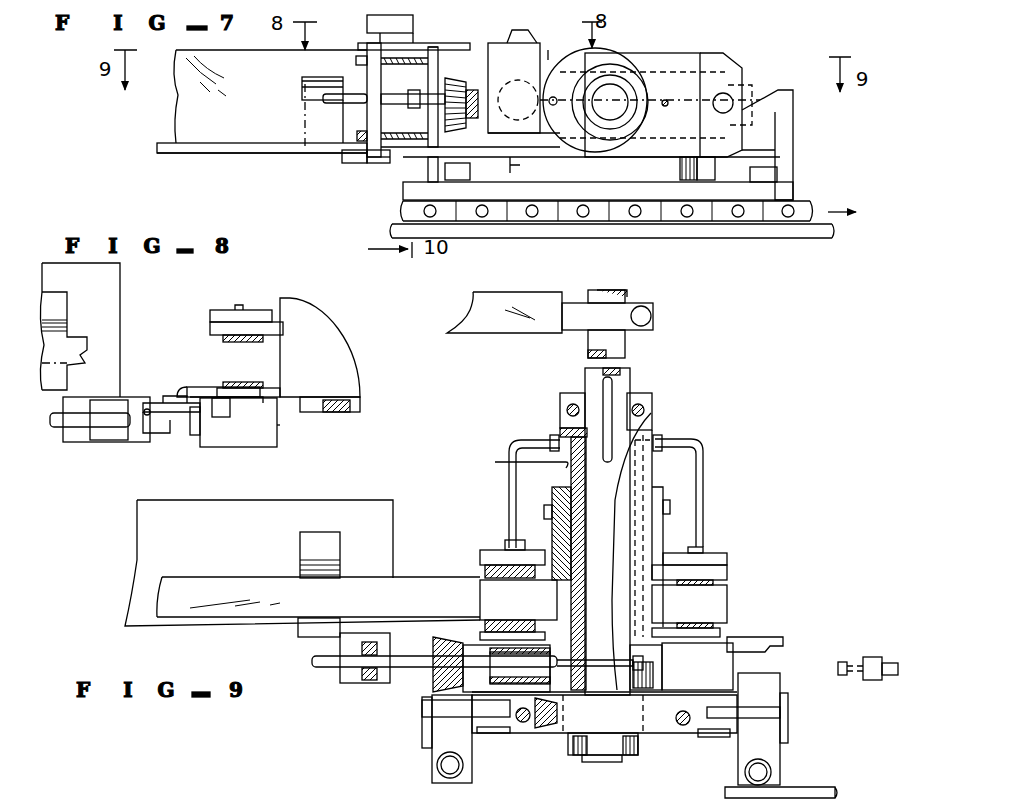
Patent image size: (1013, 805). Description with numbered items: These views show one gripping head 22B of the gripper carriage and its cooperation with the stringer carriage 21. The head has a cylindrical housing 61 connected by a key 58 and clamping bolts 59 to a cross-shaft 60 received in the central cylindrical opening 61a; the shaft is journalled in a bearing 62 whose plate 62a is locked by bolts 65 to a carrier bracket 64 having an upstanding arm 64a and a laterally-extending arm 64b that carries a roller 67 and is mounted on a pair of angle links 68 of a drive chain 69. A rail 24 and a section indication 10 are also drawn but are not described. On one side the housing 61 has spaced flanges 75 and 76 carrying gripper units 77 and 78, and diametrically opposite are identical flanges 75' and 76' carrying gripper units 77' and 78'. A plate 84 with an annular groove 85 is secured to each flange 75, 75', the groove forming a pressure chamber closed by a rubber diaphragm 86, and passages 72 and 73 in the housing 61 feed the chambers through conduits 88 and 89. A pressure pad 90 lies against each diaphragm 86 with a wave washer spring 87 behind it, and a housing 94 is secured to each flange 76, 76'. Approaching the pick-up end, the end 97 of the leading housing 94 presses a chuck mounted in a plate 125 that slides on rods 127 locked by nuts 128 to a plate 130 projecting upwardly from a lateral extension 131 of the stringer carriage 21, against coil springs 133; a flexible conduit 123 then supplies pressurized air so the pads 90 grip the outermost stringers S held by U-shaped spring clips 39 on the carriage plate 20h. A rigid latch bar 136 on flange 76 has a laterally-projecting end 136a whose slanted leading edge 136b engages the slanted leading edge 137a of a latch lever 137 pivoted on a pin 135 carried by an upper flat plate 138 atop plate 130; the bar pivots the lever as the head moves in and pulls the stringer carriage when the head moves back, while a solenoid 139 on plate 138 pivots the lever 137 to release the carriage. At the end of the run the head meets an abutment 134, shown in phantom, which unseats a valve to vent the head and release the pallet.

In FIG. 7, the strip workpiece S is at (183, 114).
In FIG. 8, the strip workpiece S is at (74, 340).
In FIG. 9, the strip workpiece S is at (470, 308).
In FIG. 7, the longitudinally-extending plate 20h is at (155, 145).
In FIG. 8, the longitudinally-extending plate 20h is at (120, 272).
In FIG. 9, the longitudinally-extending plate 20h is at (137, 538).
In FIG. 7, the stringer carriage 21 is at (196, 155).
In FIG. 7, the flexible conduit 123 is at (302, 88).
In FIG. 9, the flexible conduit 123 is at (312, 662).
In FIG. 7, the U-shaped spring clip 39 is at (323, 97).
In FIG. 8, the U-shaped spring clip 39 is at (58, 292).
In FIG. 9, the U-shaped spring clip 39 is at (300, 556).
In FIG. 7, the nut 128 is at (363, 136).
In FIG. 7, the rod 127 is at (347, 148).
In FIG. 7, the plate 130 is at (370, 157).
In FIG. 9, the plate 130 is at (348, 676).
In FIG. 7, the lateral extension 131 is at (377, 165).
In FIG. 9, the lateral extension 131 is at (352, 686).
In FIG. 7, the solenoid 139 is at (367, 30).
In FIG. 8, the solenoid 139 is at (97, 442).
In FIG. 7, the upper flat horizontal plate 138 is at (356, 61).
In FIG. 8, the upper flat horizontal plate 138 is at (133, 440).
In FIG. 7, the plate 125 is at (437, 58).
In FIG. 7, the apparatus 10 is at (433, 49).
In FIG. 7, the coil spring 133 is at (387, 110).
In FIG. 7, the housing 94 is at (512, 72).
In FIG. 8, the housing 94 is at (277, 425).
In FIG. 9, the housing 94 is at (709, 677).
In FIG. 7, the latch bar 136 is at (512, 40).
In FIG. 8, the latch bar 136 is at (201, 423).
In FIG. 9, the latch bar 136 is at (774, 652).
In FIG. 7, the pressure pad 90 is at (552, 43).
In FIG. 8, the pressure pad 90 is at (236, 382).
In FIG. 9, the pressure pad 90 is at (629, 604).
In FIG. 7, the plate of bearing assembly 62a is at (692, 53).
In FIG. 9, the plate of bearing assembly 62a is at (583, 745).
In FIG. 7, the bearing 62 is at (625, 80).
In FIG. 9, the bearing 62 is at (640, 743).
In FIG. 7, the cross-shaft 60 is at (617, 107).
In FIG. 8, the cross-shaft 60 is at (350, 402).
In FIG. 9, the cross-shaft 60 is at (628, 345).
In FIG. 7, the bolts 65 is at (734, 97).
In FIG. 9, the bolts 65 is at (485, 731).
In FIG. 7, the carrier bracket 64 is at (772, 102).
In FIG. 9, the carrier bracket 64 is at (430, 711).
In FIG. 7, the upstanding arm 64a is at (815, 112).
In FIG. 9, the upstanding arm 64a is at (432, 733).
In FIG. 7, the laterally-extending arm 64b is at (440, 190).
In FIG. 9, the laterally-extending arm 64b is at (445, 760).
In FIG. 7, the roller 67 is at (447, 172).
In FIG. 9, the roller 67 is at (443, 779).
In FIG. 7, the gripping head 22B is at (760, 45).
In FIG. 9, the gripping head 22B is at (770, 533).
In FIG. 7, the angle links 68 is at (465, 222).
In FIG. 7, the drive chain 69 is at (576, 222).
In FIG. 9, the drive chain 69 is at (430, 706).
In FIG. 7, the rail 24 is at (668, 238).
In FIG. 8, the pin 135 is at (143, 405).
In FIG. 9, the pin 135 is at (655, 316).
In FIG. 8, the laterally-projecting end 136a is at (170, 387).
In FIG. 8, the slanted leading edge 136b is at (165, 420).
In FIG. 8, the latch lever 137 is at (150, 407).
In FIG. 8, the slanted leading edge 137a is at (187, 392).
In FIG. 8, the end of gripper head housing 97 is at (205, 438).
In FIG. 8, the cylindrical housing 61 is at (350, 367).
In FIG. 9, the cylindrical housing 61 is at (652, 468).
In FIG. 8, the flange 75 is at (224, 314).
In FIG. 9, the flange 75 is at (467, 564).
In FIG. 8, the gripper unit 77 is at (256, 304).
In FIG. 9, the gripper unit 77 is at (439, 543).
In FIG. 8, the flange 76 is at (275, 371).
In FIG. 9, the flange 76 is at (490, 613).
In FIG. 8, the gripper unit 78 is at (273, 359).
In FIG. 9, the gripper unit 78 is at (472, 630).
In FIG. 9, the key 58 is at (612, 388).
In FIG. 9, the clamping bolts 59 is at (566, 408).
In FIG. 9, the central cylindrical opening 61a is at (560, 420).
In FIG. 9, the passage 73 is at (653, 480).
In FIG. 9, the conduit 88 is at (509, 446).
In FIG. 9, the conduit 89 is at (686, 442).
In FIG. 9, the passage 72 is at (516, 457).
In FIG. 9, the rubber diaphragm 86 is at (518, 560).
In FIG. 9, the plate 84 is at (505, 548).
In FIG. 9, the annular groove 85 is at (477, 552).
In FIG. 9, the wave washer spring 87 is at (500, 590).
In FIG. 9, the gripper unit 77' is at (742, 559).
In FIG. 9, the flange 75' is at (738, 576).
In FIG. 9, the gripper unit 78' is at (732, 612).
In FIG. 9, the flange 76' is at (753, 621).
In FIG. 9, the abutment 134 is at (852, 662).